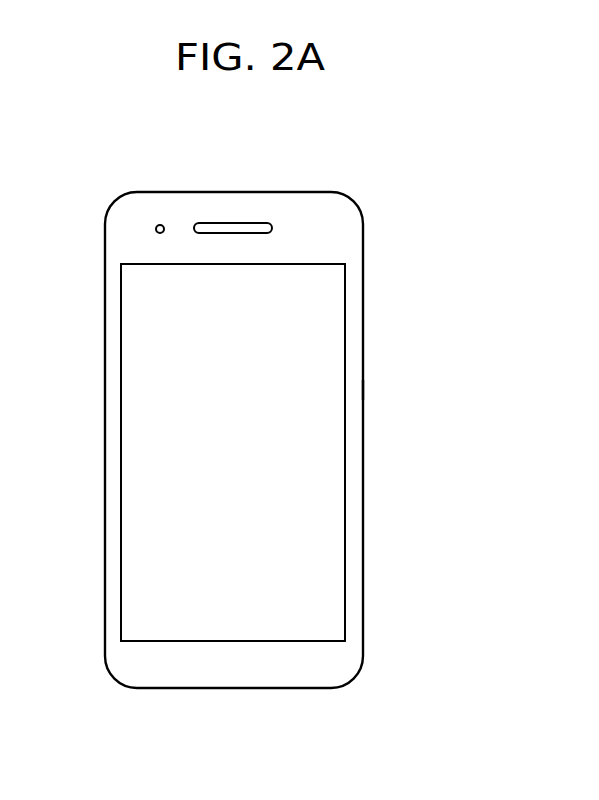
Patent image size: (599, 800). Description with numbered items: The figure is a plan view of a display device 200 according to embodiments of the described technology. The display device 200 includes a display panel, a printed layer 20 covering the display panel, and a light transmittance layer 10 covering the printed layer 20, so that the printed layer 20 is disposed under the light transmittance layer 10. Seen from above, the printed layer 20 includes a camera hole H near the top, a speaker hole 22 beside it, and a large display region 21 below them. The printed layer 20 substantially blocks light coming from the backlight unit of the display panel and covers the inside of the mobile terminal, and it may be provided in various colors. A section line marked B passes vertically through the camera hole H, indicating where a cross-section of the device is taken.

The light transmittance layer 10 is at (339, 193).
The display device 200 is at (433, 187).
The printed layer 20 is at (352, 275).
The display region 21 is at (323, 389).
The speaker hole 22 is at (232, 227).
The camera hole H is at (155, 230).
The section line B-B' B is at (160, 224).